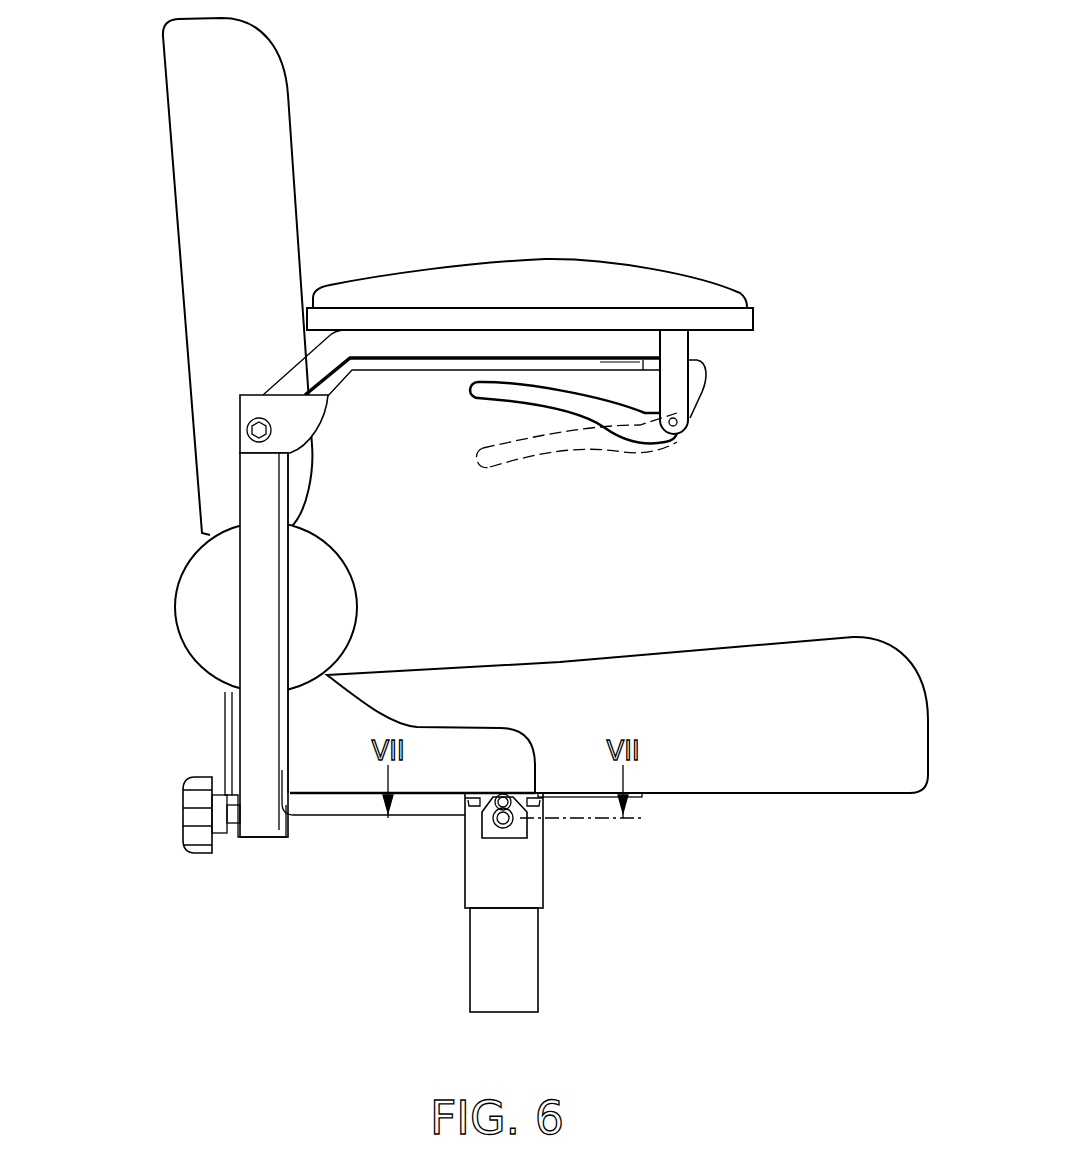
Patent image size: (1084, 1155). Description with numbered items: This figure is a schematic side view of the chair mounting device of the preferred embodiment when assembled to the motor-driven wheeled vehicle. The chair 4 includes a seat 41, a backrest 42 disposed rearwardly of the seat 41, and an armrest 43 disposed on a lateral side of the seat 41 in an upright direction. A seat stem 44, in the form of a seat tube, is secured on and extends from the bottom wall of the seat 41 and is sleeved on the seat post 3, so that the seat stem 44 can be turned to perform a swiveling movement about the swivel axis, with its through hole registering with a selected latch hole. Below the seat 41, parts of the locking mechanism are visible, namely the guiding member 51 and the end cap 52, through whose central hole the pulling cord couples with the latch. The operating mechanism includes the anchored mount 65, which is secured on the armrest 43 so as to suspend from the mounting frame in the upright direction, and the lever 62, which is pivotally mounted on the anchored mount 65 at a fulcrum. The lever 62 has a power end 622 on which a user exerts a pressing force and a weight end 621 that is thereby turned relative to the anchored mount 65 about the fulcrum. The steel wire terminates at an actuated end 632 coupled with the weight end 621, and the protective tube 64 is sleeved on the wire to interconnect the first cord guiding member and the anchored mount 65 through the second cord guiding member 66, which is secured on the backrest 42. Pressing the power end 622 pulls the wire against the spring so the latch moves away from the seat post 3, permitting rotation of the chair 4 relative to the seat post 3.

The seat post 3 is at (538, 975).
The chair 4 is at (230, 276).
The seat 41 is at (863, 793).
The backrest 42 is at (293, 115).
The armrest 43 is at (548, 260).
The seat stem 44 is at (544, 890).
The guiding member 51 is at (527, 828).
The end cap 52 is at (498, 832).
The lever 62 is at (683, 434).
The weight end 621 is at (700, 358).
The power end 622 is at (477, 395).
The actuated end 632 is at (628, 364).
The protective tube 64 is at (380, 372).
The anchored mount 65 is at (680, 388).
The second cord guiding member 66 is at (250, 408).